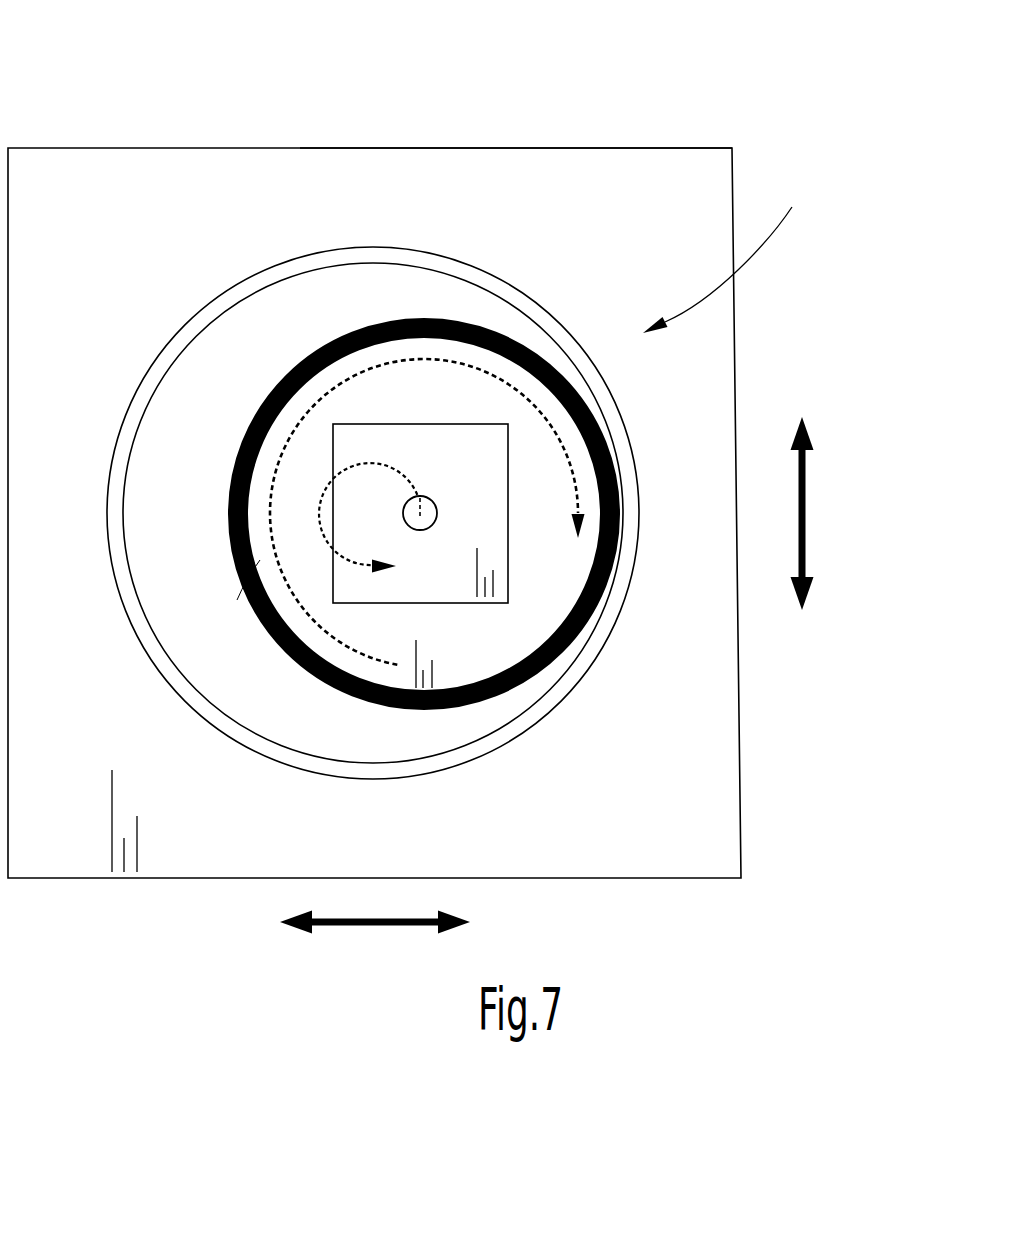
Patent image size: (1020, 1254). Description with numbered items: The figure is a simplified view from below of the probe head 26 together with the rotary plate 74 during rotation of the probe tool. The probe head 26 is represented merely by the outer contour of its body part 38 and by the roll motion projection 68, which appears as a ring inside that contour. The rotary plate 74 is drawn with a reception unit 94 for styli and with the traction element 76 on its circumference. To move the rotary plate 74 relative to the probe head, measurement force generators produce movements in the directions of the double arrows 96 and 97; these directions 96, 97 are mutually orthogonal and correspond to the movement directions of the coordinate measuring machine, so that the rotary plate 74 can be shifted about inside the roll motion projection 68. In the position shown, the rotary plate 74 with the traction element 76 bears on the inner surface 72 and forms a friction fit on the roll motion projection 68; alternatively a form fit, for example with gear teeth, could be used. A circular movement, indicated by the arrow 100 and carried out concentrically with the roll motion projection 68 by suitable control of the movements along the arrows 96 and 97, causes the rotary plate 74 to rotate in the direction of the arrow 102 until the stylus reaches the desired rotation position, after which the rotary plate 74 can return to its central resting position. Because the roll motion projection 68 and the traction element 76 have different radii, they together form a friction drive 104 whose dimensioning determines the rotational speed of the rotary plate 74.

The probe head 26 is at (270, 148).
The body part 38 is at (622, 175).
The roll motion projection 68 is at (114, 482).
The inner surface 72 is at (147, 563).
The rotary plate 74 is at (495, 633).
The traction element 76 is at (240, 580).
The reception unit 94 is at (483, 495).
The double arrow 96 is at (363, 923).
The double arrow 97 is at (807, 507).
The arrow 100 is at (365, 462).
The arrow 102 is at (397, 361).
The friction drive 104 is at (733, 254).